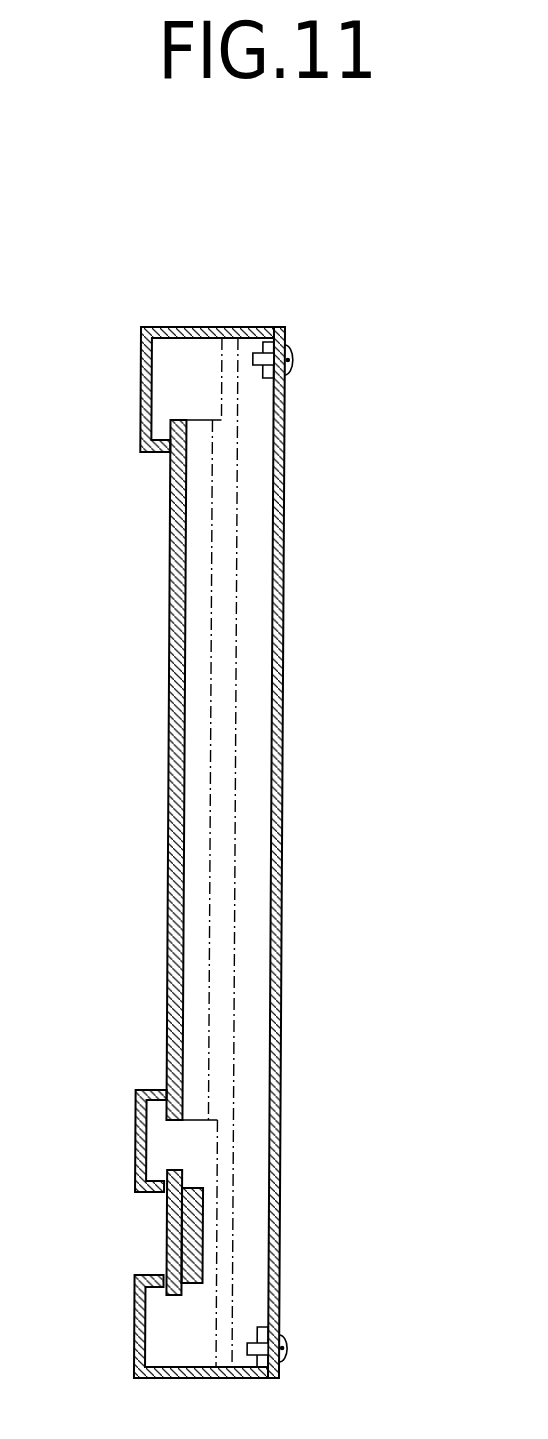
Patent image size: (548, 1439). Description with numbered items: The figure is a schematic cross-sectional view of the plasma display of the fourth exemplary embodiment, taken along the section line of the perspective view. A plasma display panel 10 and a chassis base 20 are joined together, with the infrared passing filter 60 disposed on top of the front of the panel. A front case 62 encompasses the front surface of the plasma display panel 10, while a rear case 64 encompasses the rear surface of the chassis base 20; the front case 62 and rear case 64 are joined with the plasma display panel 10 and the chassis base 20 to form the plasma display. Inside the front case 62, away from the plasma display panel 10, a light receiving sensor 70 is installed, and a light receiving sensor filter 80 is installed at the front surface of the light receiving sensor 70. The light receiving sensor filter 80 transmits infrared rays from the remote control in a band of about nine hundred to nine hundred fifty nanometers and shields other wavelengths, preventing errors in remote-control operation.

The plasma display panel 10 is at (200, 605).
The chassis base 20 is at (225, 688).
The infrared passing filter 60 is at (170, 835).
The front case 62 is at (183, 327).
The rear case 64 is at (283, 488).
The light receiving sensor 70 is at (170, 1221).
The light receiving sensor filter 80 is at (195, 1240).